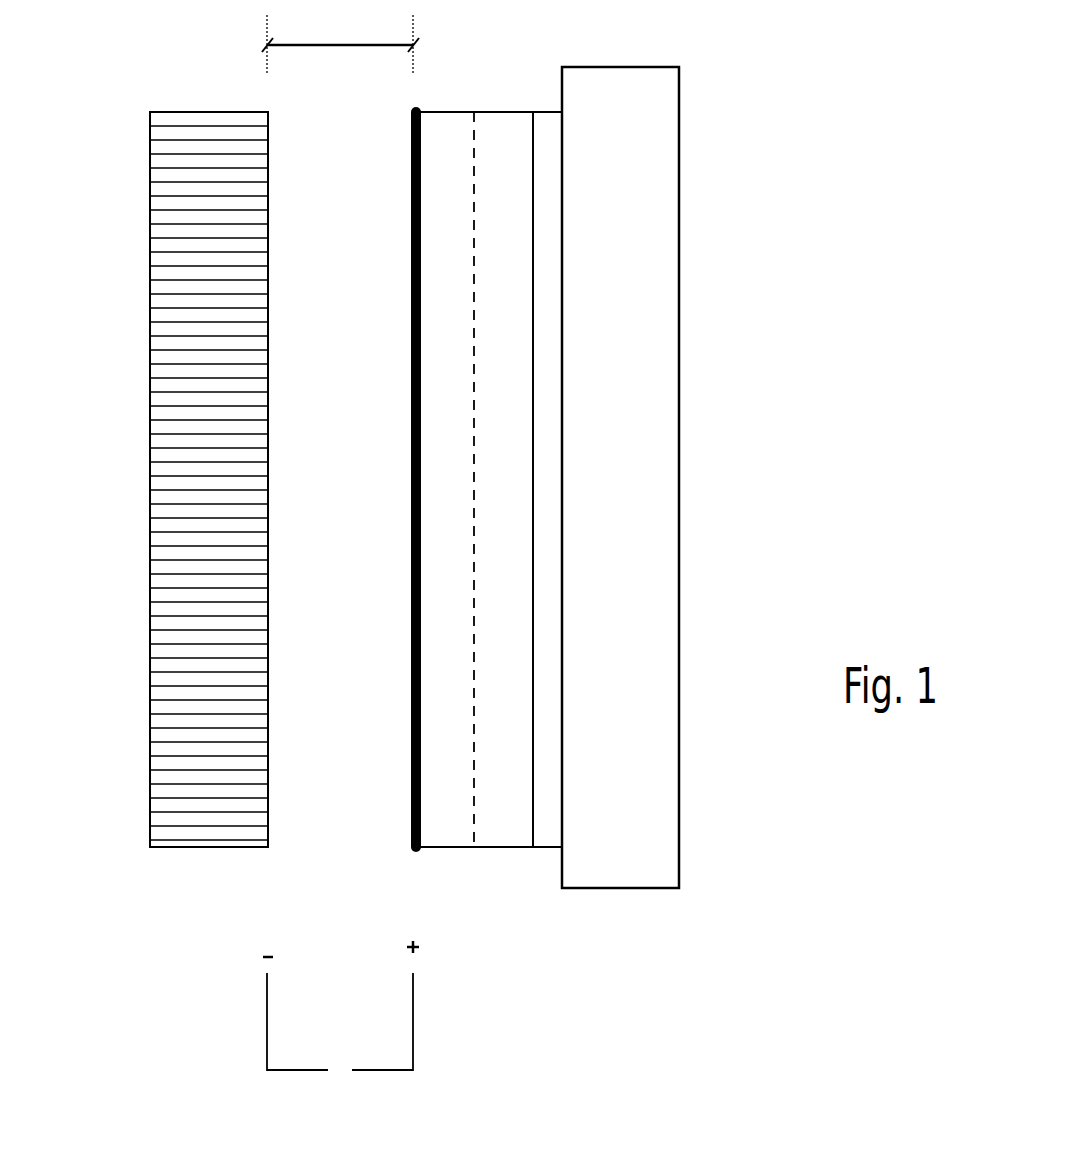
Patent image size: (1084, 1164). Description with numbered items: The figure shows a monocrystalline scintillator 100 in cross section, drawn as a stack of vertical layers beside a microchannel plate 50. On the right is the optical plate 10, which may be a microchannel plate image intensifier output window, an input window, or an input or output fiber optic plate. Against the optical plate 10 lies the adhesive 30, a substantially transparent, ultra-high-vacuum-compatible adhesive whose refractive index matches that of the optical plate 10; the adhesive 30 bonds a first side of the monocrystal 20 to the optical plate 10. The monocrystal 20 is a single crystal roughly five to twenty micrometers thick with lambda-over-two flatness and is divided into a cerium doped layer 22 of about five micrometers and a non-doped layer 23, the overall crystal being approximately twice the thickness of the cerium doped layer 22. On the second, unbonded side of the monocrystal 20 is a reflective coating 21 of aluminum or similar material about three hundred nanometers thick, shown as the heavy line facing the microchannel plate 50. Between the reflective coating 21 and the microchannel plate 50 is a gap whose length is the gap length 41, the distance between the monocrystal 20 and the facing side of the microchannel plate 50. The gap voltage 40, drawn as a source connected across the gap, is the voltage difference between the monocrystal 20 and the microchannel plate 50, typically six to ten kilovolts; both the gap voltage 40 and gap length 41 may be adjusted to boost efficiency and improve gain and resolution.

The monocrystalline scintillator 100 is at (856, 383).
The optical plate 10 is at (680, 847).
The monocrystal 20 is at (475, 847).
The reflective coating 21 is at (410, 503).
The cerium doped layer 22 is at (450, 110).
The non-doped layer 23 is at (510, 110).
The adhesive 30 is at (548, 847).
The gap voltage 40 is at (341, 1013).
The gap length 41 is at (340, 43).
The microchannel plate 50 is at (152, 798).